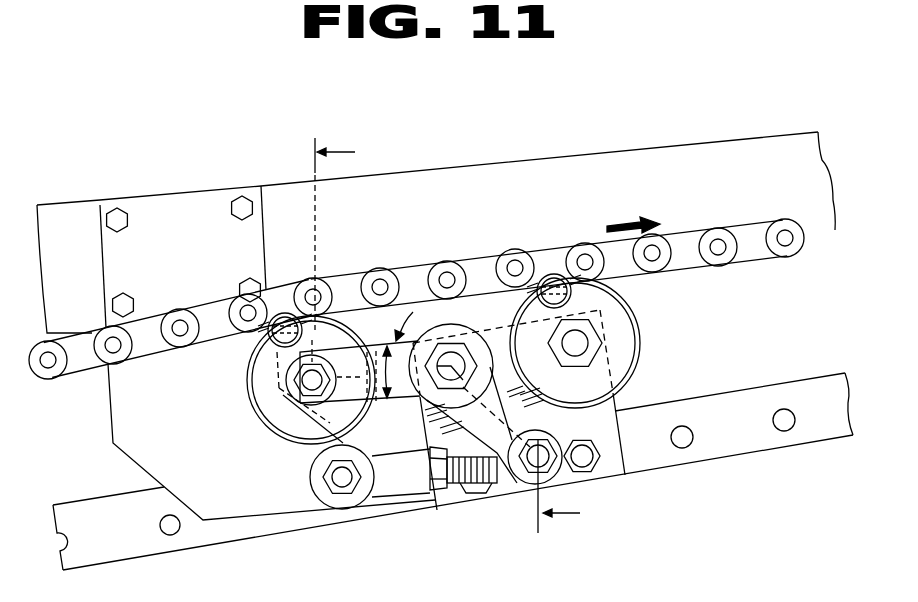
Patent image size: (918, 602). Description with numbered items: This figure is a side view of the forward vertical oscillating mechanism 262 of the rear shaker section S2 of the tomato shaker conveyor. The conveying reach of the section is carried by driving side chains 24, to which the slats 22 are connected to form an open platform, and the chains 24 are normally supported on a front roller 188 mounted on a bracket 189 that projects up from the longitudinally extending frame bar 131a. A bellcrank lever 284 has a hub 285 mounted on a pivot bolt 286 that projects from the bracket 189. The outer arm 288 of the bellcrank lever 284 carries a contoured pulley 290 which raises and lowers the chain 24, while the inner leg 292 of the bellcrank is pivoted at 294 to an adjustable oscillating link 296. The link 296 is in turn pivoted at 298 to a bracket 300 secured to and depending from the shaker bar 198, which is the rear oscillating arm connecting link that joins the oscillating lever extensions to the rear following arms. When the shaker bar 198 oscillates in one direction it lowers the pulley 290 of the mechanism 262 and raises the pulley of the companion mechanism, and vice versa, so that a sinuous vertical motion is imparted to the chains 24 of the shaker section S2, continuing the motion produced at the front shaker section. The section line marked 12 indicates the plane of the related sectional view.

The rear shaker section S2 is at (700, 88).
The forward vertical oscillating mechanism 262 is at (387, 158).
The shaker bar 198 is at (550, 162).
The section line 12 is at (431, 335).
The side chain 24 is at (411, 272).
The slat 22 is at (550, 275).
The front roller 188 is at (618, 336).
The bracket 189 is at (604, 420).
The bellcrank lever 284 is at (424, 322).
The pivot bolt 286 is at (460, 356).
The hub 285 is at (426, 398).
The contoured pulley 290 is at (266, 393).
The outer arm 288 is at (310, 407).
The inner leg 292 is at (513, 428).
The pivot 294 is at (552, 482).
The adjustable oscillating link 296 is at (409, 484).
The pivot 298 is at (343, 484).
The bracket 300 is at (127, 425).
The frame bar 131a is at (717, 450).